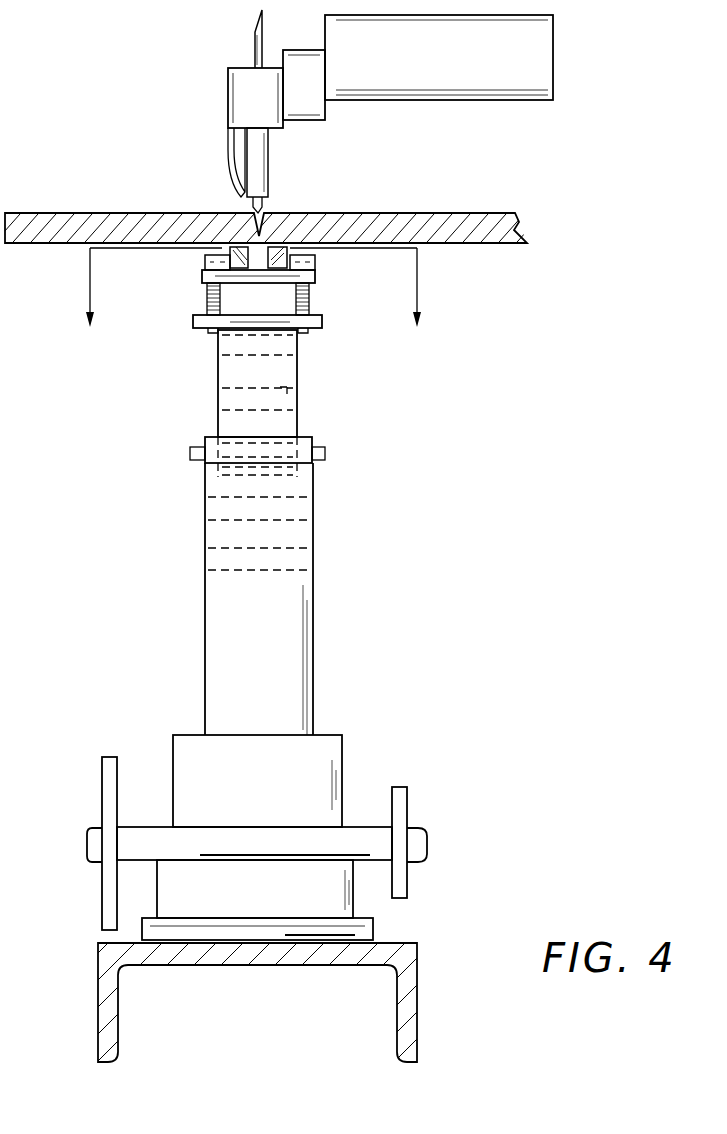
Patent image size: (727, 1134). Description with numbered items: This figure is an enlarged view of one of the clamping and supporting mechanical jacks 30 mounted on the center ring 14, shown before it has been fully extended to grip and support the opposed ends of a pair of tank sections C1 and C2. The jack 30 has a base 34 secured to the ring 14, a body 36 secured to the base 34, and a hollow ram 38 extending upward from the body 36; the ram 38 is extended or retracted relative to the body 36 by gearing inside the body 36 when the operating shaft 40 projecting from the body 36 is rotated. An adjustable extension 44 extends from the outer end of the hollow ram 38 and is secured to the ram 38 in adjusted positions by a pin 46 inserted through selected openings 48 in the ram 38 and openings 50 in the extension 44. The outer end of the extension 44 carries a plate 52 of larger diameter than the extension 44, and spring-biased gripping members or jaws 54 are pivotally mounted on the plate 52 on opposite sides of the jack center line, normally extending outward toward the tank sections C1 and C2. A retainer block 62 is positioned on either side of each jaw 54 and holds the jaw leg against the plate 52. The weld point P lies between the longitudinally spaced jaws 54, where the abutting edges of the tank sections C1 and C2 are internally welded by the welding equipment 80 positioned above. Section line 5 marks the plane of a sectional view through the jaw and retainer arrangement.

The center ring 14 is at (428, 1011).
The mechanical jack 30 is at (136, 609).
The base 34 is at (360, 928).
The body 36 is at (323, 748).
The hollow ram 38 is at (290, 625).
The operating shaft 40 is at (135, 834).
The adjustable extension 44 is at (298, 368).
The pin 46 is at (317, 460).
The openings 48 is at (210, 478).
The openings 50 is at (288, 396).
The plate 52 is at (198, 320).
The gripping members or jaws 54 is at (233, 250).
The retainer block 62 is at (207, 257).
The welding equipment 80 is at (372, 140).
The section line 5- 5 is at (253, 293).
The weld point P is at (278, 196).
The tank section C1 is at (68, 205).
The tank section C2 is at (467, 205).